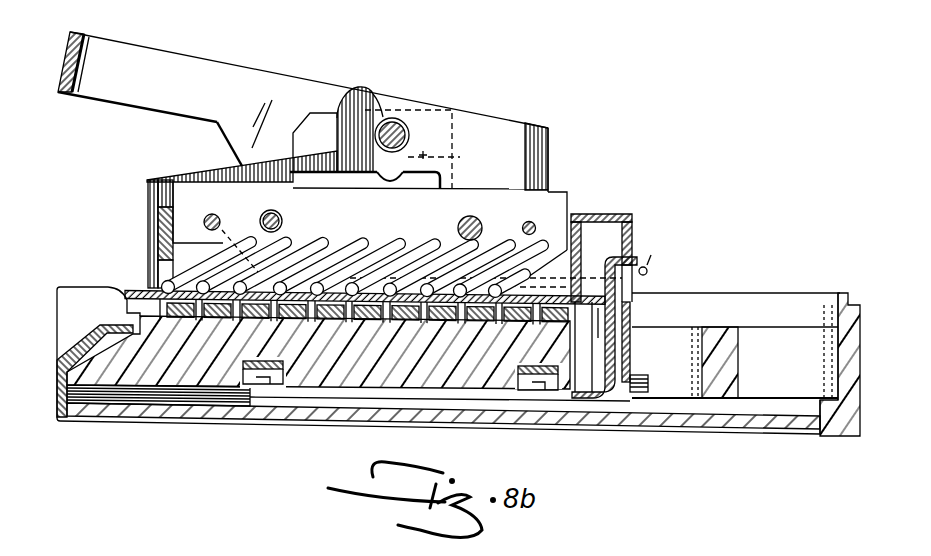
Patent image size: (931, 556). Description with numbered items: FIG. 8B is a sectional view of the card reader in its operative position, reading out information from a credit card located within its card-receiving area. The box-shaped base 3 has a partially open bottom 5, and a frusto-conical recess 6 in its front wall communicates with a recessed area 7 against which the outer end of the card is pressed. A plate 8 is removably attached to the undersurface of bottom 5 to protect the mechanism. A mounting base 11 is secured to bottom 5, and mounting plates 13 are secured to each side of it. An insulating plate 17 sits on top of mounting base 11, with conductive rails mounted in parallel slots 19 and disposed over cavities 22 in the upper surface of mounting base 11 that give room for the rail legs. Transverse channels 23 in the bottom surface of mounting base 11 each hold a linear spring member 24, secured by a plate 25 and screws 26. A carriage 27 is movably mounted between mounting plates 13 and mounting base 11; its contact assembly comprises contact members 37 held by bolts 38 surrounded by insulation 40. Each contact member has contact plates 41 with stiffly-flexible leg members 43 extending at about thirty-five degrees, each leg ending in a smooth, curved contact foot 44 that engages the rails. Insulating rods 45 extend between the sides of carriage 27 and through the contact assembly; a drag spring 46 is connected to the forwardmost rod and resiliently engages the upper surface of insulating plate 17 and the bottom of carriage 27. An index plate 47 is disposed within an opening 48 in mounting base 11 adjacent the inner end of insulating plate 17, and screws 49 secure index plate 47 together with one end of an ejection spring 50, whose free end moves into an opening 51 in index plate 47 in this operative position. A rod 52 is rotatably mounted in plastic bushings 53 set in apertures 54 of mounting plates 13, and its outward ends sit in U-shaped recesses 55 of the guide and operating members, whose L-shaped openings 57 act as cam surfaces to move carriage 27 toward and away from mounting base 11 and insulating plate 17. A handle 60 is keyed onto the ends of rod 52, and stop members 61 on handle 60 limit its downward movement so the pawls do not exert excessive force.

The base 3 is at (853, 367).
The partially open bottom 5 is at (780, 420).
The frusto-conical recess 6 is at (78, 356).
The recessed area 7 is at (93, 266).
The plate 8 is at (204, 412).
The mounting base 11 is at (148, 382).
The mounting plates 13 is at (524, 137).
The insulating plate 17 is at (585, 302).
The parallel slots 19 is at (392, 302).
The cavities 22 is at (198, 322).
The transverse channels 23 is at (250, 386).
The linear spring member 24 is at (255, 361).
The plate 25 is at (240, 366).
The screws 26 is at (265, 377).
The carriage 27 is at (592, 214).
The contact members 37 is at (192, 192).
The bolts 38 is at (466, 220).
The insulation 40 is at (482, 237).
The contact plates 41 is at (560, 192).
The leg members 43 is at (181, 287).
The contact foot 44 is at (373, 277).
The insulating rods 45 is at (205, 216).
The drag spring 46 is at (245, 221).
The index plate 47 is at (633, 235).
The opening 48 is at (686, 328).
The screws 49 is at (650, 380).
The ejection spring 50 is at (616, 332).
The opening 51 is at (633, 289).
The rod 52 is at (394, 120).
The plastic bushings 53 is at (411, 138).
The apertures 54 is at (380, 120).
The U-shaped recesses 55 is at (456, 163).
The L-shaped openings 57 is at (325, 176).
The handle 60 is at (148, 56).
The stop members 61 is at (240, 147).